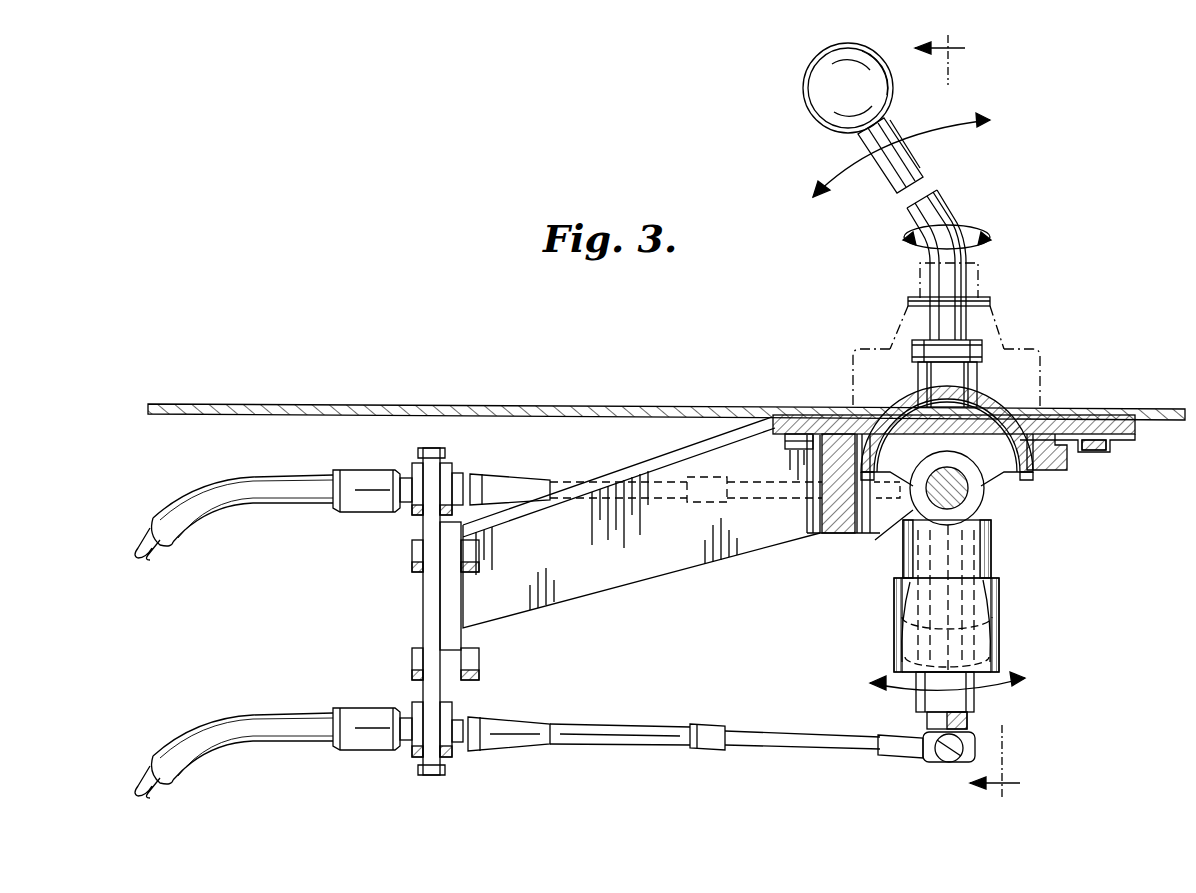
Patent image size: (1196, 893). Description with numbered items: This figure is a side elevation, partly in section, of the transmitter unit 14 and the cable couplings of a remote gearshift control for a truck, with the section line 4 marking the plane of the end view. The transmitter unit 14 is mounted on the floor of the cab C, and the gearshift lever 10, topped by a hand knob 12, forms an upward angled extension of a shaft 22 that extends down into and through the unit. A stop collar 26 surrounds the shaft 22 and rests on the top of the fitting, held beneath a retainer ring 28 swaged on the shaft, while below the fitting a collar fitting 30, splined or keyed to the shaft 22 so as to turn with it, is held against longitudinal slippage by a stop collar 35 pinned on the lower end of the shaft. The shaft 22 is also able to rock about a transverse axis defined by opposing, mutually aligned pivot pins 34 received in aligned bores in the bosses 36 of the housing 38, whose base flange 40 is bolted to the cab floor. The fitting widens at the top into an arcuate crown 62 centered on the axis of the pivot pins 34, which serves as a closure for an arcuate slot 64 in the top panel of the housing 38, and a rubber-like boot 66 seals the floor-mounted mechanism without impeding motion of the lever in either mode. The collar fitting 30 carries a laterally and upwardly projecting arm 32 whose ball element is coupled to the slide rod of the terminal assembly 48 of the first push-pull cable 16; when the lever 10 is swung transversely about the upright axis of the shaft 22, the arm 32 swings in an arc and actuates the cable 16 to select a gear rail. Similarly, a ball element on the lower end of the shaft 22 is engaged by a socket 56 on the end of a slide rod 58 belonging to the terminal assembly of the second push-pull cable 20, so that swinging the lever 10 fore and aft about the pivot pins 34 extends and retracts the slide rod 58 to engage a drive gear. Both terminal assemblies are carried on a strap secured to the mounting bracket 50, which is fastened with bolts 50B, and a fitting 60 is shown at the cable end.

The cab C is at (395, 404).
The gearshift lever 10 is at (897, 178).
The hand knob 12 is at (806, 88).
The section line 4— 4 is at (974, 417).
The transmitter unit 14 is at (1056, 338).
The boot 66 is at (990, 313).
The retainer ring 28 is at (913, 350).
The stop collar 26 is at (973, 382).
The shaft 22 is at (1003, 397).
The arcuate slot 64 is at (905, 402).
The base flange 40 is at (1130, 426).
The crown 62 is at (1020, 445).
The pivot pins 34 is at (972, 480).
The bosses 36 is at (960, 508).
The housing 38 is at (832, 535).
The arm 32 is at (897, 604).
The collar fitting 30 is at (1000, 615).
The stop collar 35 is at (978, 703).
The socket 56 is at (940, 760).
The slide rod 58 is at (773, 748).
The cable end fitting 60 is at (492, 742).
The push-pull cable 20 is at (275, 714).
The push-pull cable 16 is at (278, 476).
The terminal assembly 48 is at (522, 476).
The mounting bracket 50 is at (463, 600).
The bracket bolts 50B is at (412, 555).